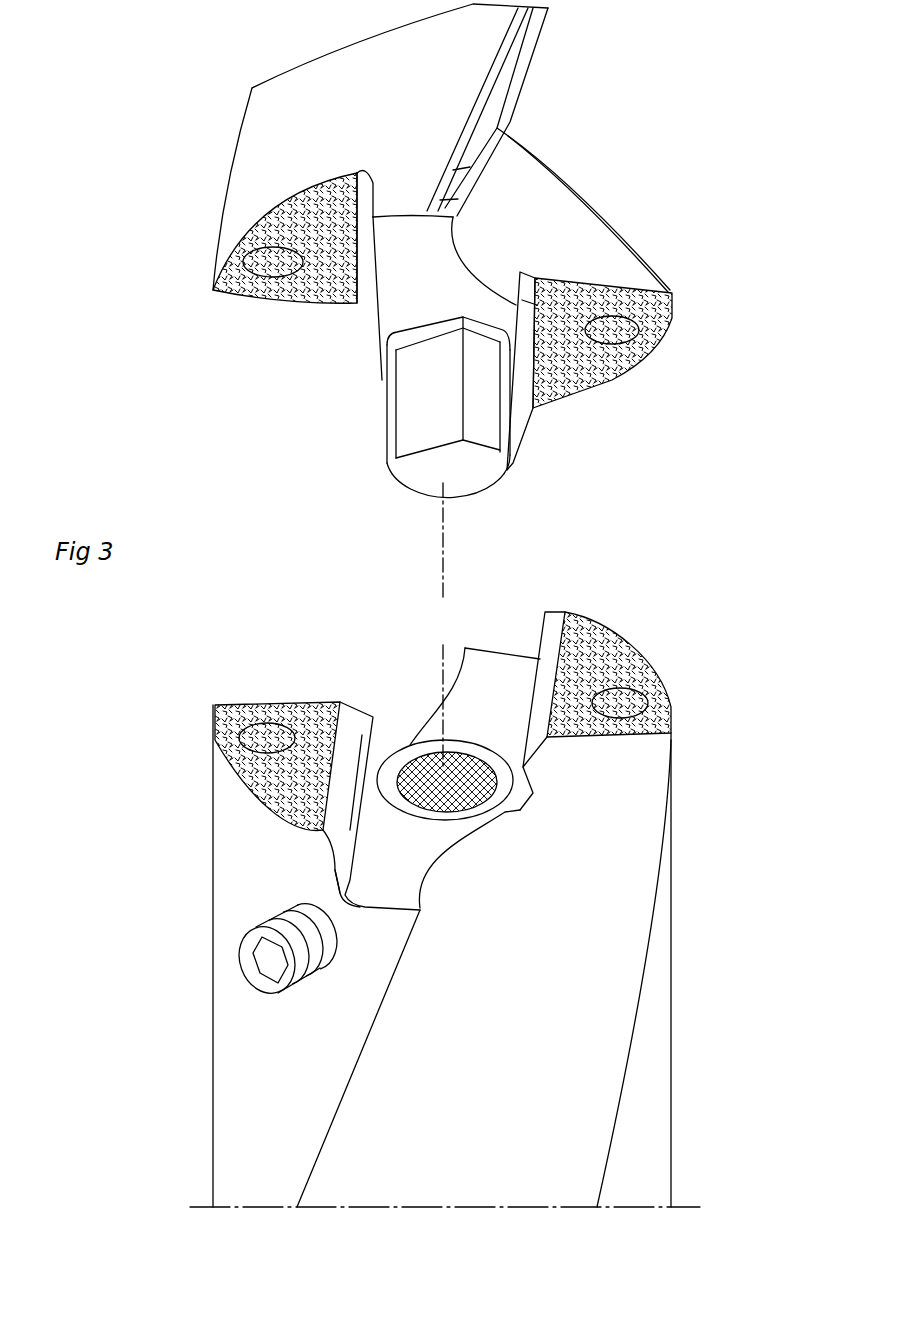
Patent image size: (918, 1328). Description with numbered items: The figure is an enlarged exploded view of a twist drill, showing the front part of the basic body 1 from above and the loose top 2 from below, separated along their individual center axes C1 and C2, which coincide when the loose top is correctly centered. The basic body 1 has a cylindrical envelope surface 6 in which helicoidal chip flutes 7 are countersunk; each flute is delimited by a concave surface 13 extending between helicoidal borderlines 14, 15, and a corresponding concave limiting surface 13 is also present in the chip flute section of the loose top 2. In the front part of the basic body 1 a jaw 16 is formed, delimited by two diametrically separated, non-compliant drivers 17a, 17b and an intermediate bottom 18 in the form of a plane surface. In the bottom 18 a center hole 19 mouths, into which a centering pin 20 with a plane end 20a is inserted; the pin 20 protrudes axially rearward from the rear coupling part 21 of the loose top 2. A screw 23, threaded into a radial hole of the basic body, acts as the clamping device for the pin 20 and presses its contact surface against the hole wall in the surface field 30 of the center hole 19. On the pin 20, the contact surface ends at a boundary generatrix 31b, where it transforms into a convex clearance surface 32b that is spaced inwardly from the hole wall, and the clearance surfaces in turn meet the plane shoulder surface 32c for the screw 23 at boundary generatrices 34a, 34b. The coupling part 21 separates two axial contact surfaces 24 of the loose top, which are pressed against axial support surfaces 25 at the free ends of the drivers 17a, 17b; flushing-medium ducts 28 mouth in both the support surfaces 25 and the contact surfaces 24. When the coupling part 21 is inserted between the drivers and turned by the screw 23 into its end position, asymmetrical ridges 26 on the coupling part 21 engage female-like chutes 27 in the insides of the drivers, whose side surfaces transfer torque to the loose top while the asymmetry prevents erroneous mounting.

The basic body 1 is at (699, 834).
The loose top 2 is at (702, 294).
The cylindrical envelope surface 6 is at (248, 1146).
The chip flutes 7 is at (603, 970).
The concave surfaces 13 is at (522, 232).
The helicoidal borderline 14 is at (360, 1050).
The helicoidal borderline 15 is at (623, 1078).
The jaw 16 is at (521, 640).
The driver 17a is at (213, 693).
The driver 17b is at (612, 615).
The bottom 18 is at (485, 709).
The center hole 19 is at (400, 793).
The centering pin 20 is at (467, 422).
The plane end 20a is at (410, 484).
The coupling part 21 is at (356, 372).
The screw 23 is at (290, 983).
The axial contact surfaces 24 is at (300, 232).
The axial support surfaces 25 is at (275, 791).
The ridges 26 is at (366, 300).
The chutes 27 is at (530, 797).
The flushing-medium ducts 28 is at (265, 262).
The surface field 30 is at (452, 796).
The boundary generatrix 31b is at (492, 393).
The clearance surface 32b is at (483, 370).
The shoulder surface 32c is at (408, 399).
The boundary generatrix 34a is at (405, 420).
The boundary generatrix 34b is at (462, 418).
The center axis of the basic body C1 is at (443, 677).
The center axis of the loose top C2 is at (452, 588).